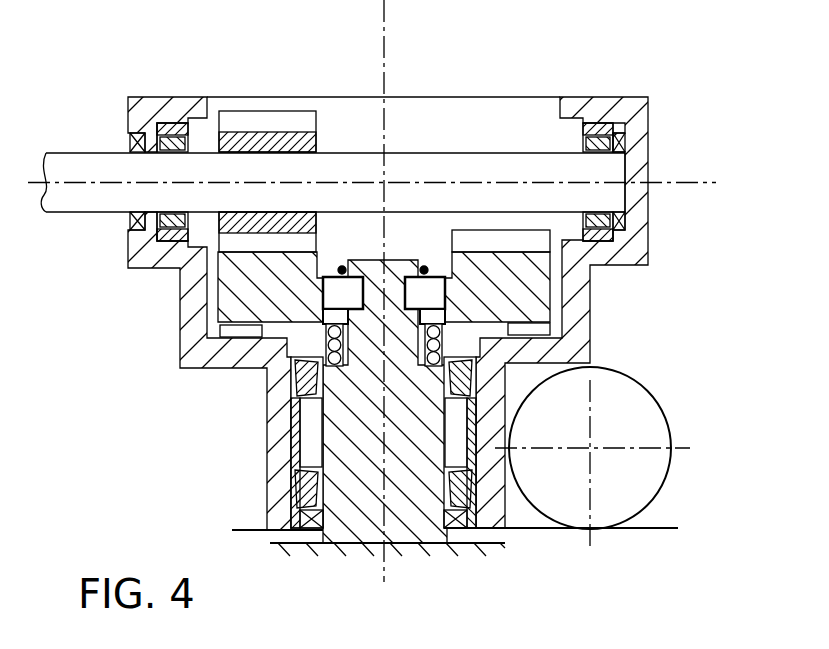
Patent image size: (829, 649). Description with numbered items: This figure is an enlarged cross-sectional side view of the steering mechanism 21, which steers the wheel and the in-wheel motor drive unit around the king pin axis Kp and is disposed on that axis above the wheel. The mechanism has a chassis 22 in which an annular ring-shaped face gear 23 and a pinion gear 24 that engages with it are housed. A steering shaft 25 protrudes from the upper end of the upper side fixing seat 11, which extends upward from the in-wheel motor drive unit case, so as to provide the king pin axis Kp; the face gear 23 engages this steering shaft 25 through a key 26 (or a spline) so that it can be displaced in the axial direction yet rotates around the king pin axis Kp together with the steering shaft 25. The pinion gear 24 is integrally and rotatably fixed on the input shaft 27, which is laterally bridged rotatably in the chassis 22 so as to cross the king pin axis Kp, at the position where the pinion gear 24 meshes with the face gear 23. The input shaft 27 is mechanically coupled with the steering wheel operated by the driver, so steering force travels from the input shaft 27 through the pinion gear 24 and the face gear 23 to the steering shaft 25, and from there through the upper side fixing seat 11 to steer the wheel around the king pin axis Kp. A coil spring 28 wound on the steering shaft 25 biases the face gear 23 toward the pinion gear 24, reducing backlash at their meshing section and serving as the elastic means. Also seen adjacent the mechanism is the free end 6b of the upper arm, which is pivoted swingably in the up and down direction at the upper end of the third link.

The king pin axis Kp is at (393, 47).
The steering mechanism 21 is at (656, 141).
The chassis 22 is at (613, 93).
The face gear 23 is at (238, 283).
The pinion gear 24 is at (287, 110).
The steering shaft 25 is at (358, 544).
The key 26 is at (333, 300).
The input shaft 27 is at (70, 152).
The coil spring 28 is at (317, 357).
The upper side fixing seat 11 is at (457, 552).
The free end 6b is at (672, 452).